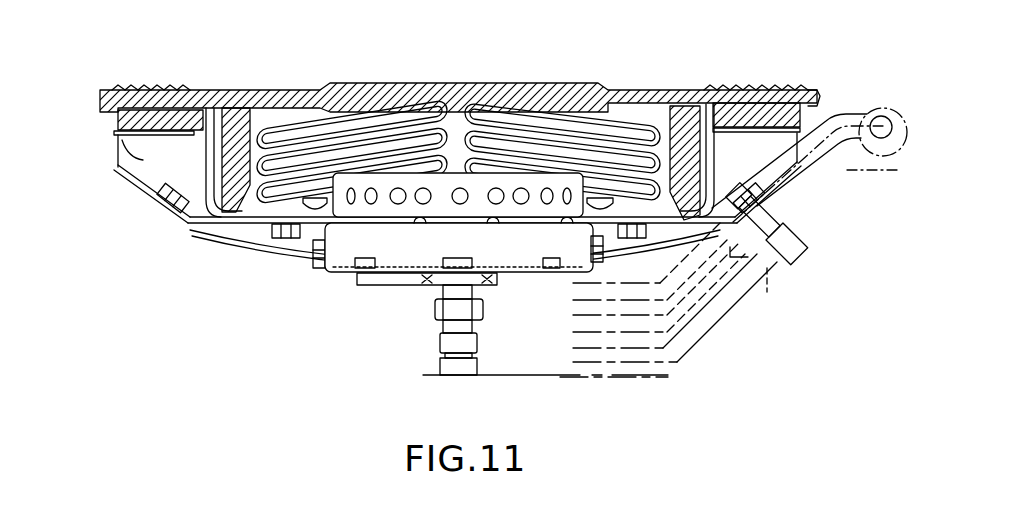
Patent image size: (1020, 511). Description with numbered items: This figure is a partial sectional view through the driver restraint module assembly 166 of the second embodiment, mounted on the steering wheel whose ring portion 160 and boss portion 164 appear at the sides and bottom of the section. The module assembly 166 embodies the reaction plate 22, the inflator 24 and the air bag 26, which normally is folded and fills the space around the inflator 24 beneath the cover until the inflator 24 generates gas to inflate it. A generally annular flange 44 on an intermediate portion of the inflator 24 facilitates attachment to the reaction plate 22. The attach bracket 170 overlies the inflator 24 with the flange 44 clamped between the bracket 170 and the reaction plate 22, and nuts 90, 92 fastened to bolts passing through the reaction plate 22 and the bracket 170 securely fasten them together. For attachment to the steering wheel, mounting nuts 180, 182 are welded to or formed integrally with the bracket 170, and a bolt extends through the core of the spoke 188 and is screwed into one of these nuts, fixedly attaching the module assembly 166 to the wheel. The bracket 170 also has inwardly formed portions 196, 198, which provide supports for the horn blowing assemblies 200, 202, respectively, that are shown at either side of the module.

The driver restraint module assembly 166 is at (341, 83).
The air bag 26 is at (396, 120).
The horn blowing assembly 200 is at (818, 100).
The horn blowing assembly 202 is at (116, 120).
The inwardly formed portion 198 is at (118, 167).
The mounting nut 182 is at (160, 203).
The attach bracket 170 is at (203, 230).
The nut 92 is at (288, 242).
The inflator 24 is at (341, 262).
The boss portion 164 is at (437, 305).
The annular flange 44 is at (480, 224).
The nut 90 is at (592, 236).
The reaction plate 22 is at (657, 236).
The inwardly formed portion 196 is at (768, 141).
The mounting nut 180 is at (735, 205).
The spoke 188 is at (782, 212).
The ring portion 160 is at (880, 134).